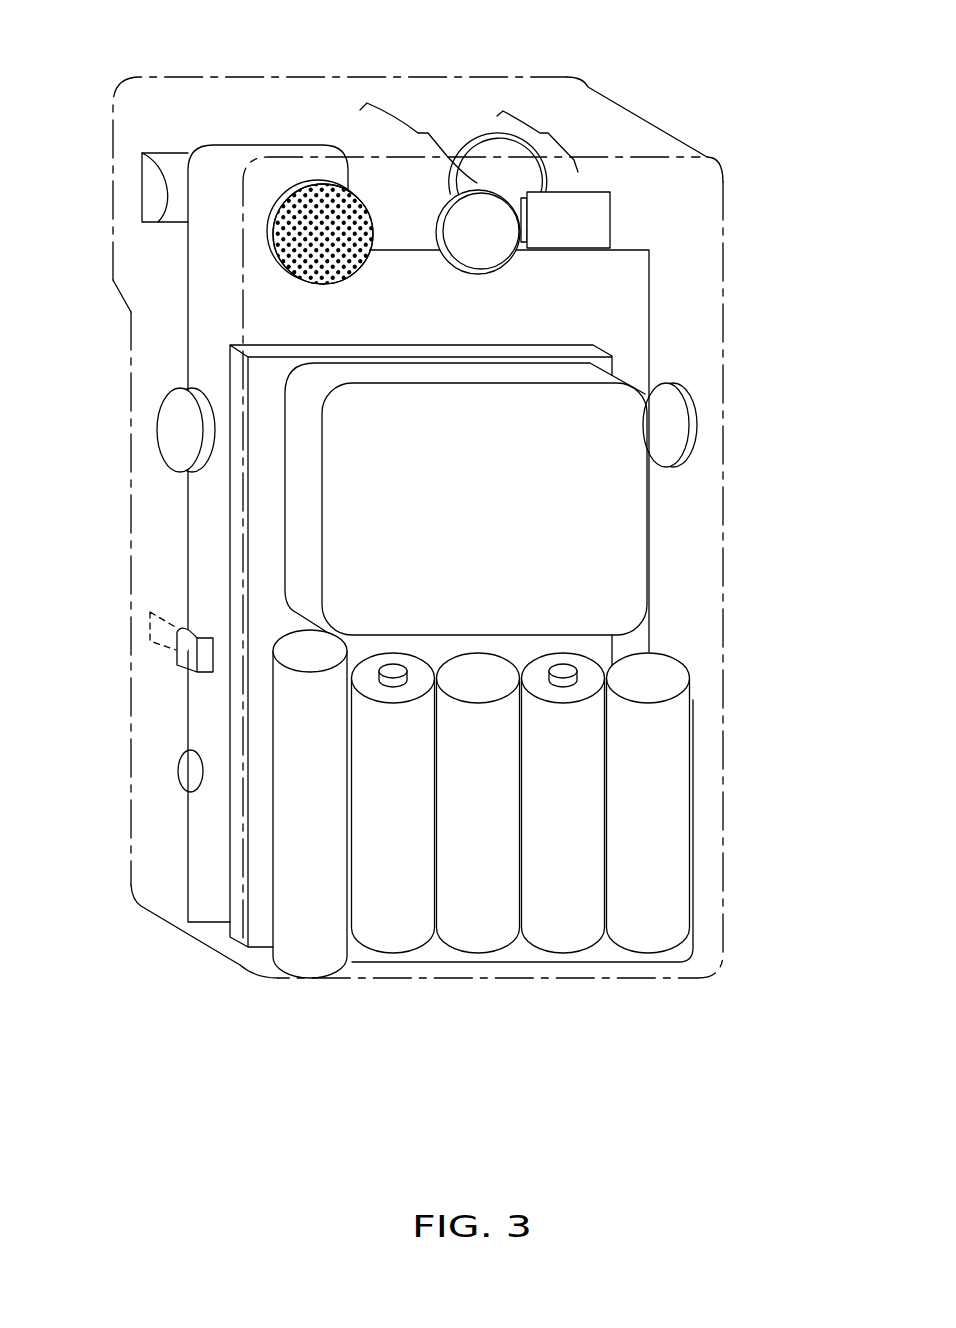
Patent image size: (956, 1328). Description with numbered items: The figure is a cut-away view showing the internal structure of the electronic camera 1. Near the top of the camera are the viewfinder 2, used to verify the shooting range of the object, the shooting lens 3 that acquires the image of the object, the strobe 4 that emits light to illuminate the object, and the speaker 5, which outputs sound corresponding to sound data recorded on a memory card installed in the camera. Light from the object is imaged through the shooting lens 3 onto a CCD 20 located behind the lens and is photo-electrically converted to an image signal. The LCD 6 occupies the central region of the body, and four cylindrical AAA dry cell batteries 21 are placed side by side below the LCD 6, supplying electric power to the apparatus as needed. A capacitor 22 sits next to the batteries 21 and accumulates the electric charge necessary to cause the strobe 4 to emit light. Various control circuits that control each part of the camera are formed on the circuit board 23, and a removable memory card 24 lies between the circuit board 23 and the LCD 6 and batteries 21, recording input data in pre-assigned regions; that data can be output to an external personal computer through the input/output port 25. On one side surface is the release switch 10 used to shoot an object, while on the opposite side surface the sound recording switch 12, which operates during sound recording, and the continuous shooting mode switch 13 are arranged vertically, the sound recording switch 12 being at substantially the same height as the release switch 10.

The electronic camera 1 is at (730, 953).
The viewfinder 2 is at (428, 130).
The shooting lens 3 is at (550, 133).
The strobe 4 is at (170, 163).
The speaker 5 is at (311, 183).
The LCD 6 is at (620, 588).
The release switch 10 is at (697, 430).
The sound recording switch 12 is at (172, 438).
The continuous shooting mode switch 13 is at (175, 662).
The CCD 20 is at (610, 215).
The batteries 21 is at (520, 963).
The capacitor 22 is at (308, 958).
The circuit board 23 is at (200, 300).
The memory card 24 is at (235, 526).
The input/output port 25 is at (178, 779).